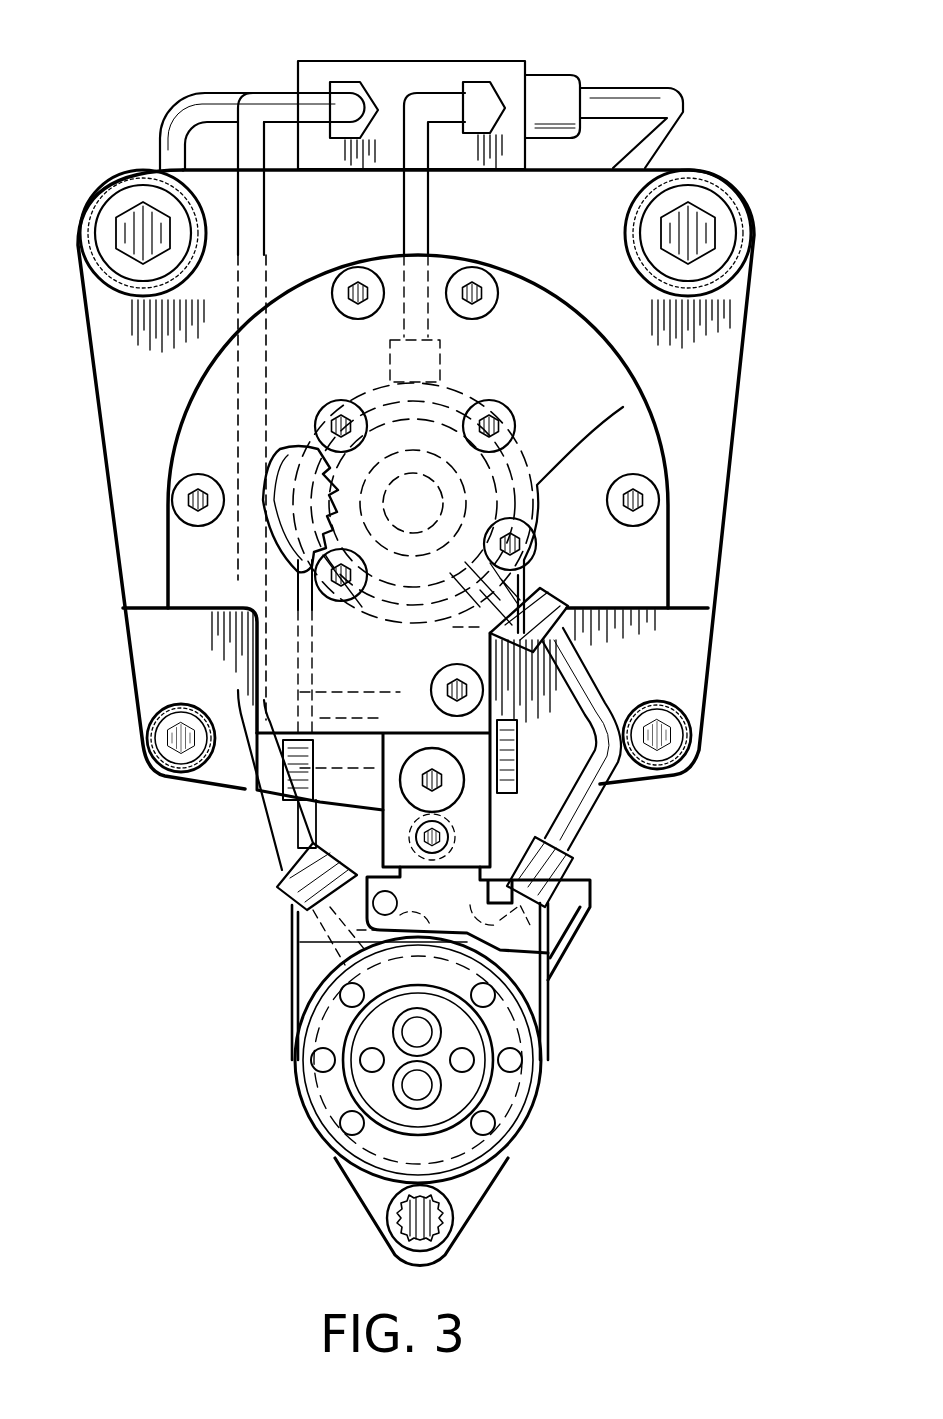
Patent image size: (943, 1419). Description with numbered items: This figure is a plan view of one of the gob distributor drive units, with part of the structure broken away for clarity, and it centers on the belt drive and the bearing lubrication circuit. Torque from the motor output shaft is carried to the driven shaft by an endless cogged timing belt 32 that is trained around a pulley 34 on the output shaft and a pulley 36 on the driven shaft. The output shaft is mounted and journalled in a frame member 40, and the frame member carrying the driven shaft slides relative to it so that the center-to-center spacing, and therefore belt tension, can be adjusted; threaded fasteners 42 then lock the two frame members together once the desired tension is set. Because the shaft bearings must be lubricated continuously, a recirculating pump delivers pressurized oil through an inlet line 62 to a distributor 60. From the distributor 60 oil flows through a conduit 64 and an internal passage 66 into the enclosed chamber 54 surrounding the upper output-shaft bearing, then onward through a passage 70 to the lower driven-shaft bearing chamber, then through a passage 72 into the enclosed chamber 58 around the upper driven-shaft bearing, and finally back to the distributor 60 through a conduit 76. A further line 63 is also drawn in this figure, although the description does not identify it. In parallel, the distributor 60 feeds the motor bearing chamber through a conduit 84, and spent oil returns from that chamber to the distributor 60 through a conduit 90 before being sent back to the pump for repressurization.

The endless cogged timing belt 32 is at (275, 518).
The pulley 34 is at (623, 407).
The pulley 36 is at (547, 1028).
The frame member 40 is at (627, 452).
The threaded fasteners 42 is at (523, 745).
The enclosed chamber 54 is at (382, 392).
The enclosed chamber 58 is at (293, 1086).
The distributor 60 is at (437, 61).
The inlet line 62 is at (455, 95).
The hydraulic tube 63 is at (597, 826).
The conduit 64 is at (432, 203).
The internal passage 66 is at (455, 415).
The passage 70 is at (565, 922).
The passage 72 is at (300, 968).
The conduit 76 is at (330, 95).
The conduit 84 is at (620, 88).
The conduit 90 is at (160, 140).